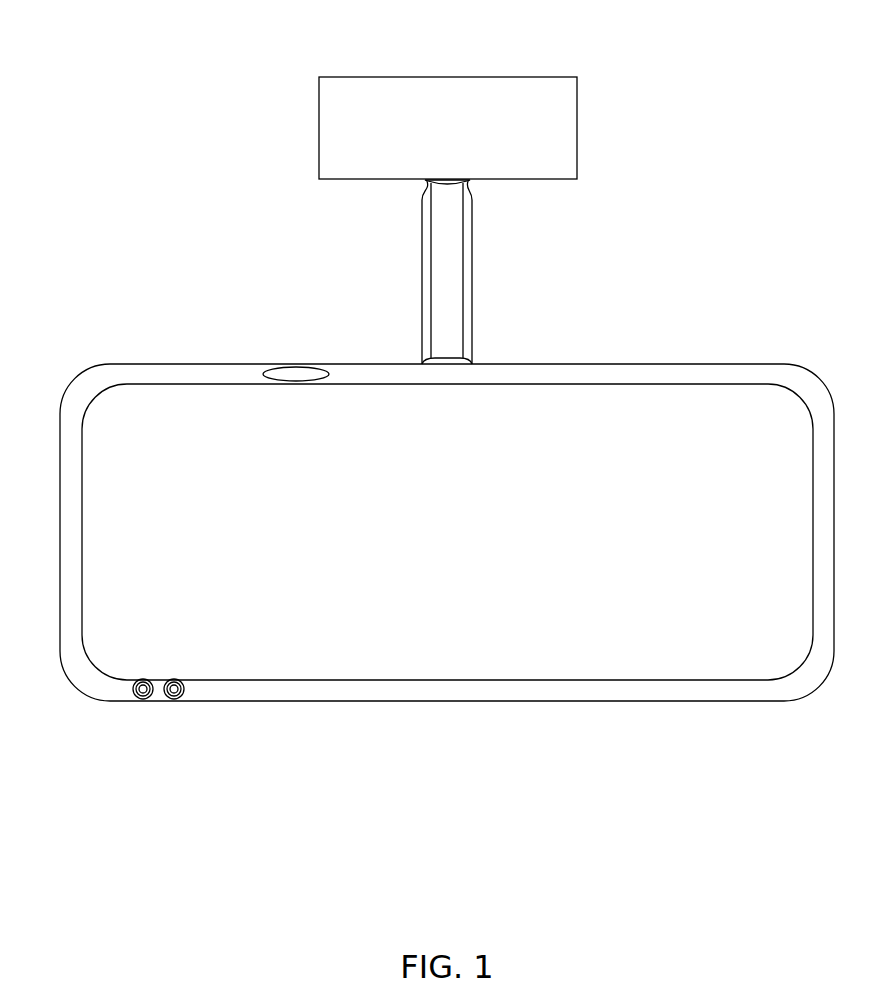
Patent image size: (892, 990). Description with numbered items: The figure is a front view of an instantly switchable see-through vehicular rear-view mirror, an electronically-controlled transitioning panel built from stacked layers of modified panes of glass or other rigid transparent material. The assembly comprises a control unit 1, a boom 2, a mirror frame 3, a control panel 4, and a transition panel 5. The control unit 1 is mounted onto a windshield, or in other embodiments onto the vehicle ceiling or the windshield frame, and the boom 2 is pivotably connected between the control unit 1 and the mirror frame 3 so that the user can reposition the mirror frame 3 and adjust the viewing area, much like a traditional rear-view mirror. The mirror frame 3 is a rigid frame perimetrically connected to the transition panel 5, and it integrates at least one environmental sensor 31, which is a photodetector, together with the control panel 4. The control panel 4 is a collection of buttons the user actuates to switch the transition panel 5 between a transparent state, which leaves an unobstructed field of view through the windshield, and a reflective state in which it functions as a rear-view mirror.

The control unit 1 is at (330, 118).
The boom 2 is at (428, 270).
The mirror frame 3 is at (200, 372).
The environmental sensor 31 is at (298, 373).
The control panel 4 is at (121, 707).
The transition panel 5 is at (648, 400).